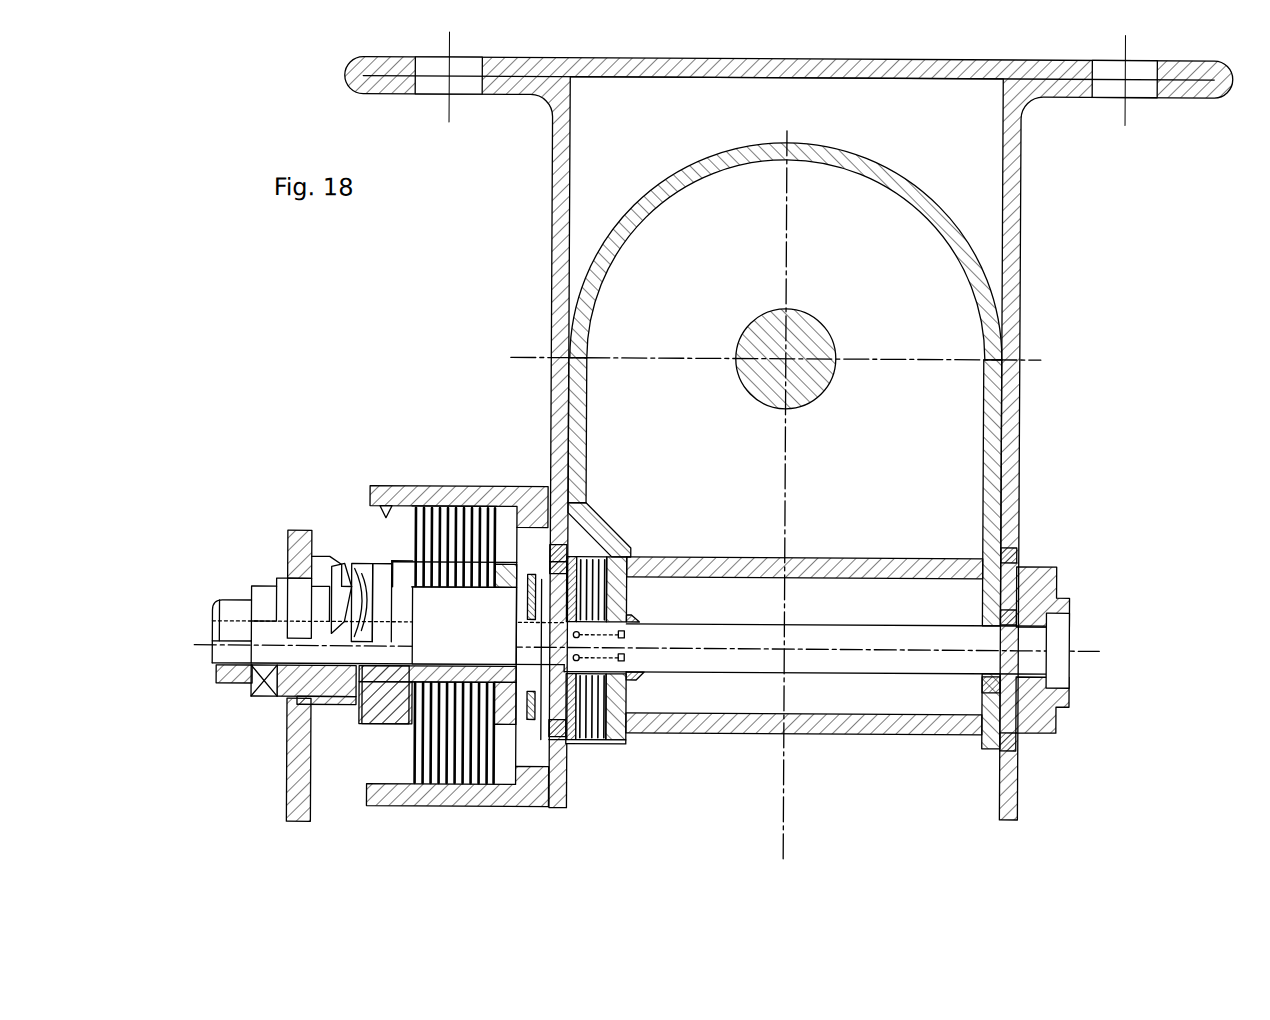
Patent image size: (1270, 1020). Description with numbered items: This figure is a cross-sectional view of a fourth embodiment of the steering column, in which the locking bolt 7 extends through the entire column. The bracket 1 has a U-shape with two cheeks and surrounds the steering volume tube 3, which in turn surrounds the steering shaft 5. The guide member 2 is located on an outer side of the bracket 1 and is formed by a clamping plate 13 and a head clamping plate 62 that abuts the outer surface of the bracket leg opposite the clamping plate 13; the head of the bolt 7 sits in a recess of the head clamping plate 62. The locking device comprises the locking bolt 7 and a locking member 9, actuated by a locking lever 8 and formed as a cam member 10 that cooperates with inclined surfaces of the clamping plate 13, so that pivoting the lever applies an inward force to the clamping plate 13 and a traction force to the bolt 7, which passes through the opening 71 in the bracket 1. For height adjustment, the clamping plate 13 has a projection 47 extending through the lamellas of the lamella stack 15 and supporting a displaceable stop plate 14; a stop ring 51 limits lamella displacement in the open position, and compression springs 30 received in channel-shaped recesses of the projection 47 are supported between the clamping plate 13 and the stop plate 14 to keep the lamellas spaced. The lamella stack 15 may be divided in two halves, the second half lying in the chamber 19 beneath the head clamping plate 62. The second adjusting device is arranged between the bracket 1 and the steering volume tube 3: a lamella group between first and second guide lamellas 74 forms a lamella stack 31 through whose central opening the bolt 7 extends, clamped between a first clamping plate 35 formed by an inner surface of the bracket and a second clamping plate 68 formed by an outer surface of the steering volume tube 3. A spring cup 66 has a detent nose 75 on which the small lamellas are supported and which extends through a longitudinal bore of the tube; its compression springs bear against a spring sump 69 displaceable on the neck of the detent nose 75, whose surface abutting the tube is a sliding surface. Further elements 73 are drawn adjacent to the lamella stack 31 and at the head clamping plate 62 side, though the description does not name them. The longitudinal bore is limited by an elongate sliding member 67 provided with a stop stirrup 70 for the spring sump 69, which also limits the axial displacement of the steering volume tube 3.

The bracket 1 is at (553, 243).
The guide member 2 is at (1062, 564).
The steering volume tube 3 is at (1021, 334).
The steering shaft 5 is at (810, 336).
The locking bolt 7 is at (884, 664).
The locking lever 8 is at (296, 748).
The locking member 9 is at (335, 551).
The cam member 10 is at (345, 586).
The clamping plate 13 is at (376, 727).
The stop plate 14 is at (505, 565).
The lamella stack 15 is at (451, 503).
The chamber 19 is at (387, 516).
The compression springs 30 is at (455, 775).
The lamella stack 31 is at (589, 750).
The first clamping plate 35 is at (550, 570).
The projection 47 is at (408, 725).
The stop ring 51 is at (530, 722).
The head clamping plate 62 is at (1048, 733).
The spring cup 66 is at (566, 560).
The sliding member 67 is at (1071, 621).
The second clamping plate 68 is at (628, 553).
The spring sump 69 is at (631, 681).
The stop stirrup 70 is at (1058, 578).
The opening 71 is at (560, 760).
The friction ring 73 is at (1014, 552).
The guide lamellas 74 is at (604, 742).
The detent nose 75 is at (641, 678).